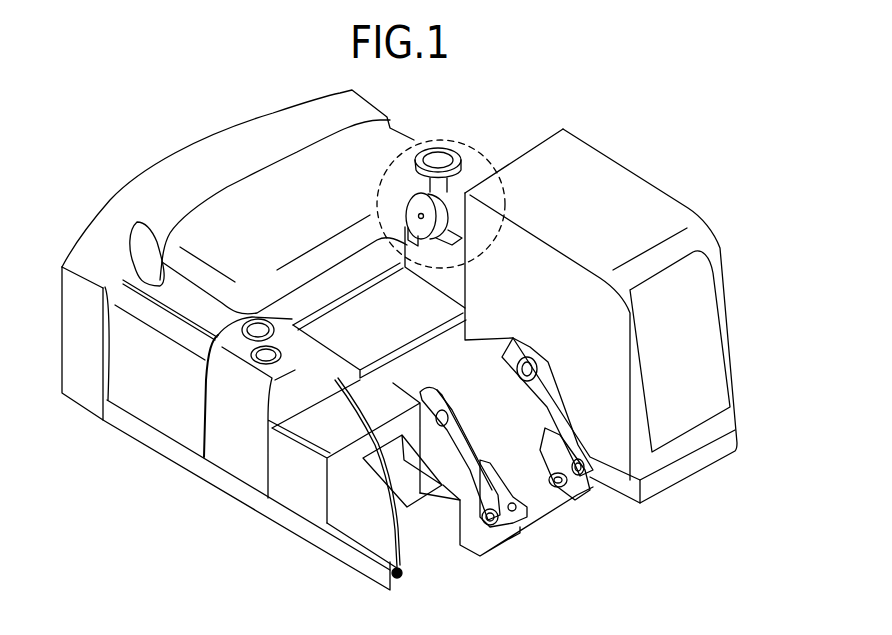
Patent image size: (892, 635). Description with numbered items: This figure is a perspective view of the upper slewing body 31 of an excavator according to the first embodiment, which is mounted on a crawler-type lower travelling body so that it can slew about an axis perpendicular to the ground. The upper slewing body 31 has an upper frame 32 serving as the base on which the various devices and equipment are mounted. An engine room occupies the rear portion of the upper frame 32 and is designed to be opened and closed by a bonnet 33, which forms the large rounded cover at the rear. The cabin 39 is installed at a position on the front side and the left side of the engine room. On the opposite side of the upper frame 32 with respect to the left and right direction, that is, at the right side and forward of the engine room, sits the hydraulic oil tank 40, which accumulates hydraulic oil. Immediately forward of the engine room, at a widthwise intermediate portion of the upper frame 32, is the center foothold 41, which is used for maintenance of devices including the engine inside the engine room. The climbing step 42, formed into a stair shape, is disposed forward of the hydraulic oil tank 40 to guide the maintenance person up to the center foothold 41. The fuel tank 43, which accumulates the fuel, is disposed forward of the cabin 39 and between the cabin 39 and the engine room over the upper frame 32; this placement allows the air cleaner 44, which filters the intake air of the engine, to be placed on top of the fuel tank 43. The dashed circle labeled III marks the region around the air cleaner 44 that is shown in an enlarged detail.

The upper slewing body 31 is at (586, 130).
The upper frame 32 is at (248, 502).
The bonnet 33 is at (258, 177).
The cabin 39 is at (688, 205).
The hydraulic oil tank 40 is at (218, 420).
The center foothold 41 is at (405, 330).
The climbing step 42 is at (398, 487).
The fuel tank 43 is at (456, 282).
The air cleaner 44 is at (460, 178).
The section III detail circle III is at (437, 140).